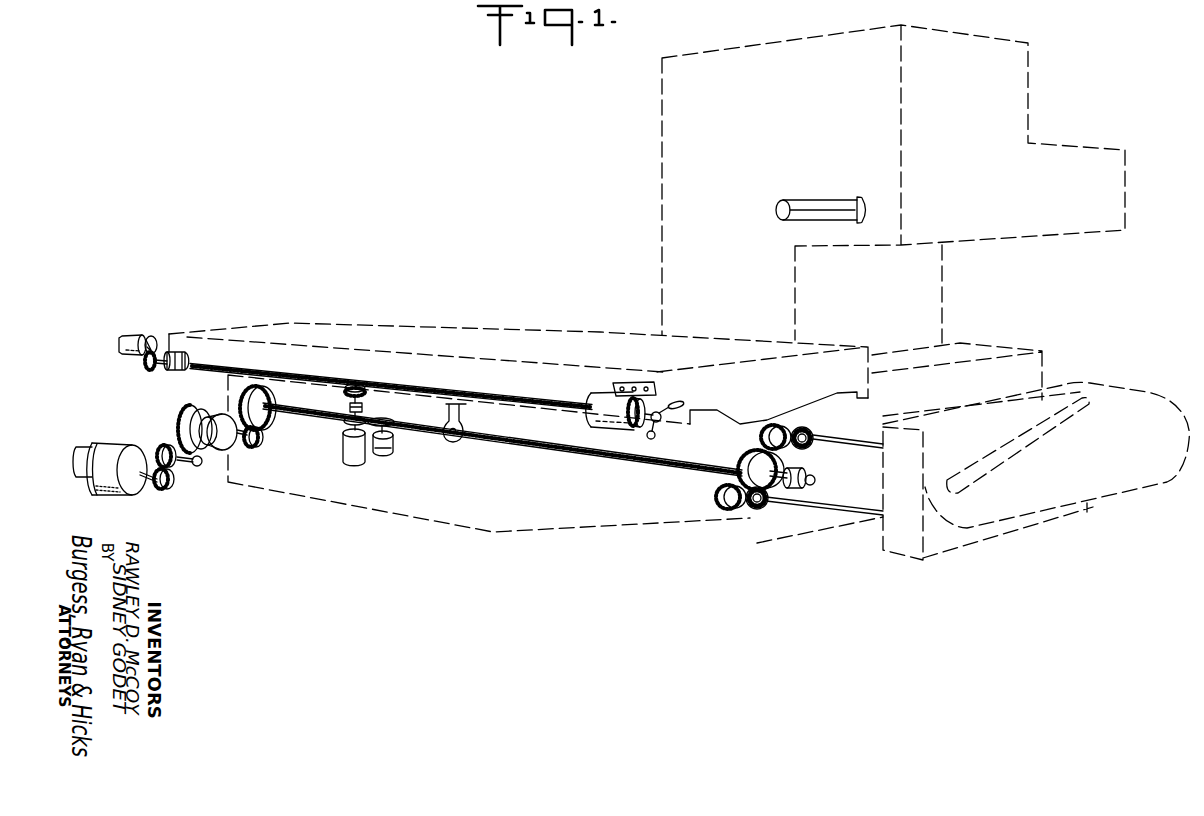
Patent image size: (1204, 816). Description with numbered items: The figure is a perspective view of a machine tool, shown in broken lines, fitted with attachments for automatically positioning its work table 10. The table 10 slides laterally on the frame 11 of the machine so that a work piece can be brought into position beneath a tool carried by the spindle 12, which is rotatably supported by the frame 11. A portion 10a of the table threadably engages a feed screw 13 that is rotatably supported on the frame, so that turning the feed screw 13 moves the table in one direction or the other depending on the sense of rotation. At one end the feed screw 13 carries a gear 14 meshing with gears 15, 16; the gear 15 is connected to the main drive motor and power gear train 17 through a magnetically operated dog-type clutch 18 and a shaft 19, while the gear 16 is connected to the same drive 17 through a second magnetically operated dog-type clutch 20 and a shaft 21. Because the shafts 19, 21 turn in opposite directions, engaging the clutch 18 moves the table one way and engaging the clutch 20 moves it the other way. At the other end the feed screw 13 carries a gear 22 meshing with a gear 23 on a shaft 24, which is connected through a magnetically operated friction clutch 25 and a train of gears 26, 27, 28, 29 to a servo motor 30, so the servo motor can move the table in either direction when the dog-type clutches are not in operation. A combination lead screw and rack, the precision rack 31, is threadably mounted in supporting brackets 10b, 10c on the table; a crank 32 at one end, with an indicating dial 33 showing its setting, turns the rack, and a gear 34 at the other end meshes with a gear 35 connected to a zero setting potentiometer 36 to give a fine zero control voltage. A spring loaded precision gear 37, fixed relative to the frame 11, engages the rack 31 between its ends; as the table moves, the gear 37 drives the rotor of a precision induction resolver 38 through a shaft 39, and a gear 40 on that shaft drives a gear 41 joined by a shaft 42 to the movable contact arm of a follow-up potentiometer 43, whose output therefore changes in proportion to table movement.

The work table 10 is at (480, 325).
The portion of the table 10a is at (446, 443).
The supporting bracket 10b is at (593, 396).
The supporting bracket 10c is at (182, 350).
The frame 11 is at (660, 198).
The spindle 12 is at (805, 198).
The feed screw 13 is at (545, 450).
The gear 14 is at (745, 457).
The gear 15 is at (778, 425).
The gear 16 is at (722, 497).
The main drive motor and power gear train 17 is at (1100, 492).
The magnetically operated dog-type clutch 18 is at (803, 426).
The shaft 19 is at (845, 448).
The magnetically operated dog-type clutch 20 is at (771, 545).
The shaft 21 is at (802, 516).
The gear 22 is at (273, 421).
The gear 23 is at (252, 447).
The shaft 24 is at (229, 476).
The magnetically operated friction clutch 25 is at (216, 410).
The gear 26 is at (181, 413).
The gear 27 is at (197, 467).
The gear 28 is at (160, 443).
The gear 29 is at (166, 490).
The servo motor 30 is at (105, 492).
The combination lead screw and rack (precision rack) 31 is at (458, 395).
The crank 32 is at (678, 402).
The indicating dial 33 is at (652, 382).
The gear 34 is at (148, 364).
The gear 35 is at (152, 337).
The zero setting potentiometer 36 is at (130, 334).
The spring loaded precision gear 37 is at (355, 383).
The precision induction resolver 38 is at (342, 456).
The shaft 39 is at (366, 404).
The gear 40 is at (343, 426).
The gear 41 is at (386, 418).
The shaft 42 is at (393, 448).
The follow-up potentiometer 43 is at (382, 454).